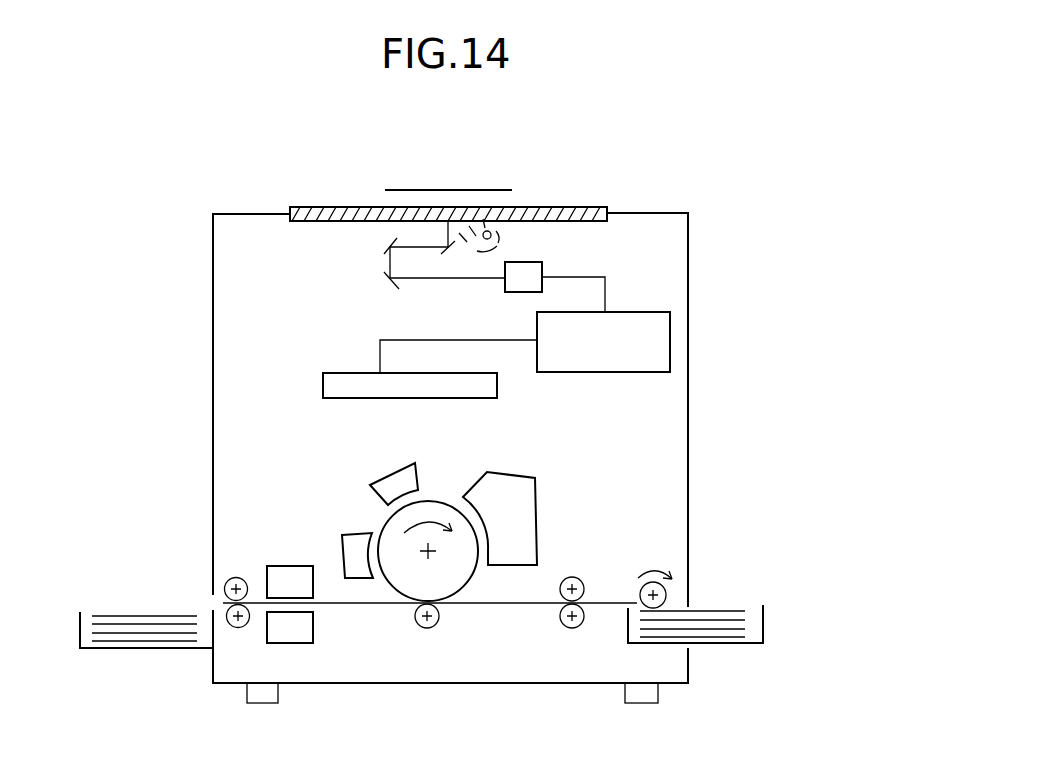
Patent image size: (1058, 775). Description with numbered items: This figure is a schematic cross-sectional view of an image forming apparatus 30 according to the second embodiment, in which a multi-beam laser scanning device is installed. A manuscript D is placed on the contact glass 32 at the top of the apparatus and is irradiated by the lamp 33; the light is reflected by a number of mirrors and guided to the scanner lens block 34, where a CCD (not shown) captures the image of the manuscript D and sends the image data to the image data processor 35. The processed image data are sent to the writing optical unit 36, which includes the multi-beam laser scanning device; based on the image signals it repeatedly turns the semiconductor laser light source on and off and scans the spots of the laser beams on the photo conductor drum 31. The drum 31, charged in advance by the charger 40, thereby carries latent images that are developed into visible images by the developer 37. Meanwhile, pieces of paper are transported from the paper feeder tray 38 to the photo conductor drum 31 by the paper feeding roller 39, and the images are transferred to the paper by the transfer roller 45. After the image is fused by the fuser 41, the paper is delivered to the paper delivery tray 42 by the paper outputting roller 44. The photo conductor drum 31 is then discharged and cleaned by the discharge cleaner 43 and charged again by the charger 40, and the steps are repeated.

The image forming apparatus 30 is at (689, 262).
The photo conductor drum 31 is at (388, 519).
The contact glass 32 is at (572, 202).
The lamp 33 is at (498, 243).
The scanner lens block 34 is at (515, 284).
The image data processor 35 is at (670, 348).
The writing optical unit 36 is at (343, 373).
The developer 37 is at (512, 480).
The paper feeder tray 38 is at (722, 607).
The paper feeding roller 39 is at (668, 594).
The charger 40 is at (405, 468).
The fuser 41 is at (283, 575).
The paper delivery tray 42 is at (142, 610).
The discharge cleaner 43 is at (350, 542).
The paper outputting roller 44 is at (237, 628).
The transfer roller 45 is at (433, 627).
The manuscript D is at (440, 190).